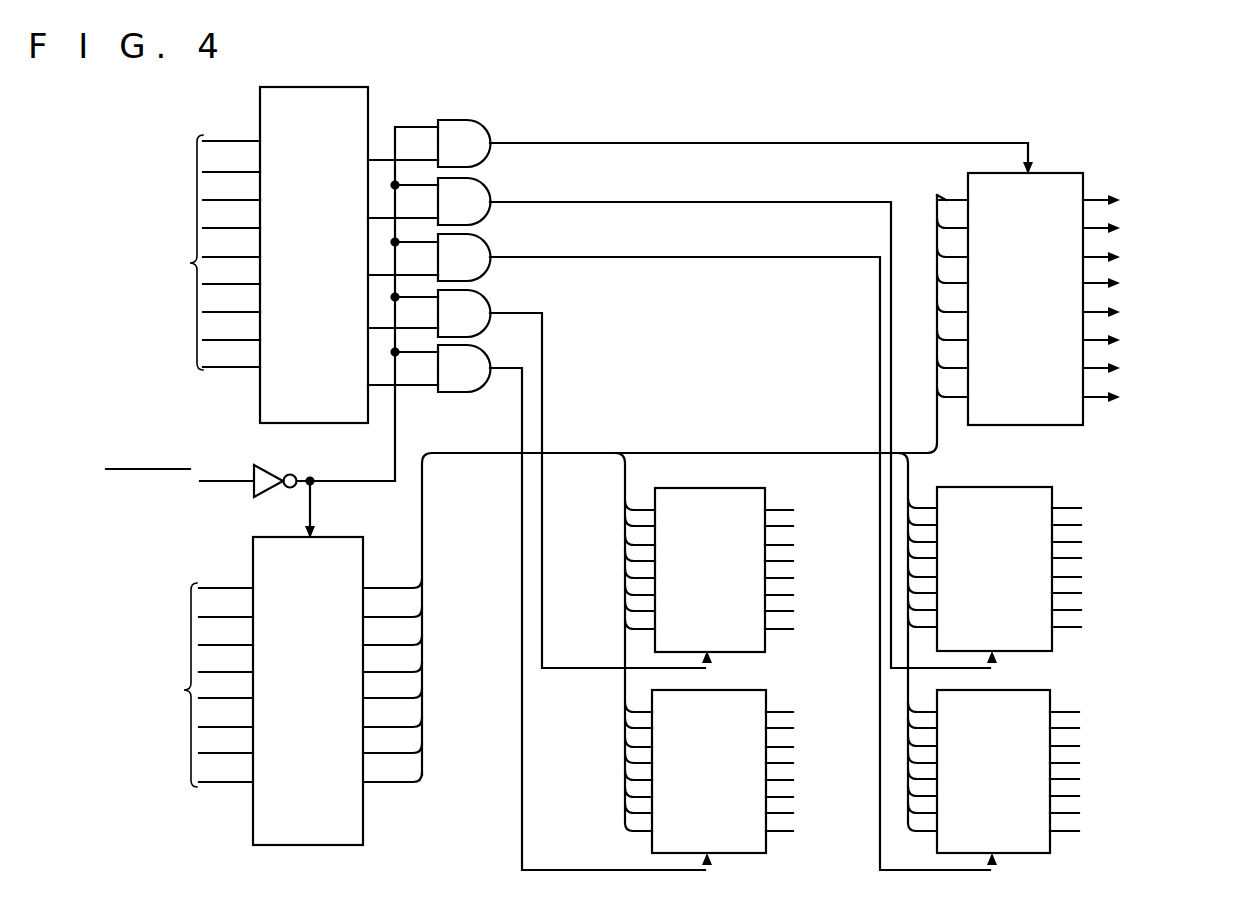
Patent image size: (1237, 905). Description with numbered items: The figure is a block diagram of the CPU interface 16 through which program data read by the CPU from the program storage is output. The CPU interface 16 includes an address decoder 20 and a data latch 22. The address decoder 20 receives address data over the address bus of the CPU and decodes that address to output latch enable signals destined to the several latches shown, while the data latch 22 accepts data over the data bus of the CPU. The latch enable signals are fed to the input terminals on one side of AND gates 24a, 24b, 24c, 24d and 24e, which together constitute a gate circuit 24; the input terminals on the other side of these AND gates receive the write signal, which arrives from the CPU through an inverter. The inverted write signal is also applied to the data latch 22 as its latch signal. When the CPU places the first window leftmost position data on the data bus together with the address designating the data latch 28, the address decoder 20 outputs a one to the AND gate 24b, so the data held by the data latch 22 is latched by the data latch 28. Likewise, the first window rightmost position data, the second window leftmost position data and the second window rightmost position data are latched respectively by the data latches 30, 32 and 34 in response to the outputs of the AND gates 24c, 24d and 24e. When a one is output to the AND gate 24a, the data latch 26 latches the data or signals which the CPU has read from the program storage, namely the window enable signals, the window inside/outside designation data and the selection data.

The CPU interface 16 is at (871, 60).
The address decoder 20 is at (355, 83).
The data latch 22 is at (345, 548).
The gate circuit 24 is at (478, 104).
The AND gate 24a is at (486, 128).
The AND gate 24b is at (486, 190).
The AND gate 24c is at (486, 248).
The AND gate 24d is at (486, 304).
The AND gate 24e is at (486, 360).
The data latch 26 is at (1055, 185).
The data latch 28 is at (1024, 495).
The data latch 30 is at (1040, 700).
The data latch 32 is at (745, 494).
The data latch 34 is at (740, 696).